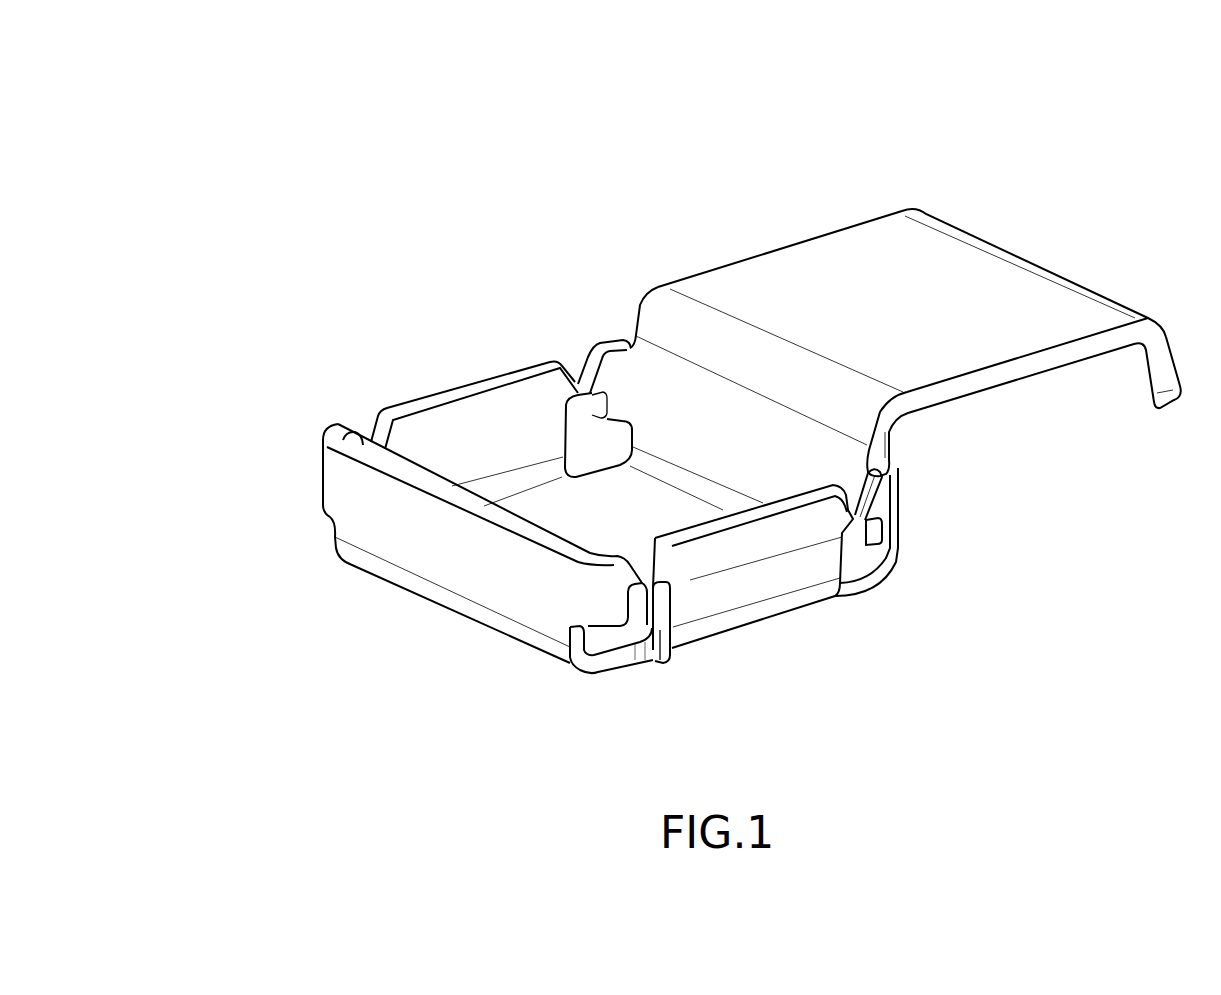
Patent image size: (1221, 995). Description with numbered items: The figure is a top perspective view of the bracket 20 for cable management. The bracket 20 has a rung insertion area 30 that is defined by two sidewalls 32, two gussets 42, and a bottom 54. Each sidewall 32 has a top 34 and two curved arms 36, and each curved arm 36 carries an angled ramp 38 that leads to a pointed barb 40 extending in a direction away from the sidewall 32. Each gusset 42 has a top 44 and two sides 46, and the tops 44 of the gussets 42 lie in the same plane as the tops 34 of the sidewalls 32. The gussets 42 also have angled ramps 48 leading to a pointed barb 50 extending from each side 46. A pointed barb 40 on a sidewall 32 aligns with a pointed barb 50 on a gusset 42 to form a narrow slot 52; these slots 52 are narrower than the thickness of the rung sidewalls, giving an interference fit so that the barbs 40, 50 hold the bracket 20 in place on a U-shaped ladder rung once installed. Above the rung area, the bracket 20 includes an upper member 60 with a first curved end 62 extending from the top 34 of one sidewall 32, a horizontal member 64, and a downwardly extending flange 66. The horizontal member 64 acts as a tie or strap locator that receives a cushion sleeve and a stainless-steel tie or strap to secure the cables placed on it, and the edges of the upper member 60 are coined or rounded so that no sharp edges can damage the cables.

The bracket 20 is at (443, 125).
The rung insertion area 30 is at (380, 318).
The sidewall 32 is at (440, 538).
The top 34 is at (363, 452).
The curved arm 36 is at (597, 588).
The angled ramp 38 is at (636, 575).
The pointed barb 40 is at (658, 628).
The gusset 42 is at (792, 575).
The top 44 is at (790, 497).
The side 46 is at (655, 635).
The angled ramp 48 is at (653, 562).
The pointed barb 50 is at (664, 586).
The slot 52 is at (577, 375).
The bottom 54 is at (553, 507).
The upper member 60 is at (1083, 232).
The first curved end 62 is at (673, 315).
The horizontal member 64 is at (748, 283).
The downwardly extending flange 66 is at (1135, 372).